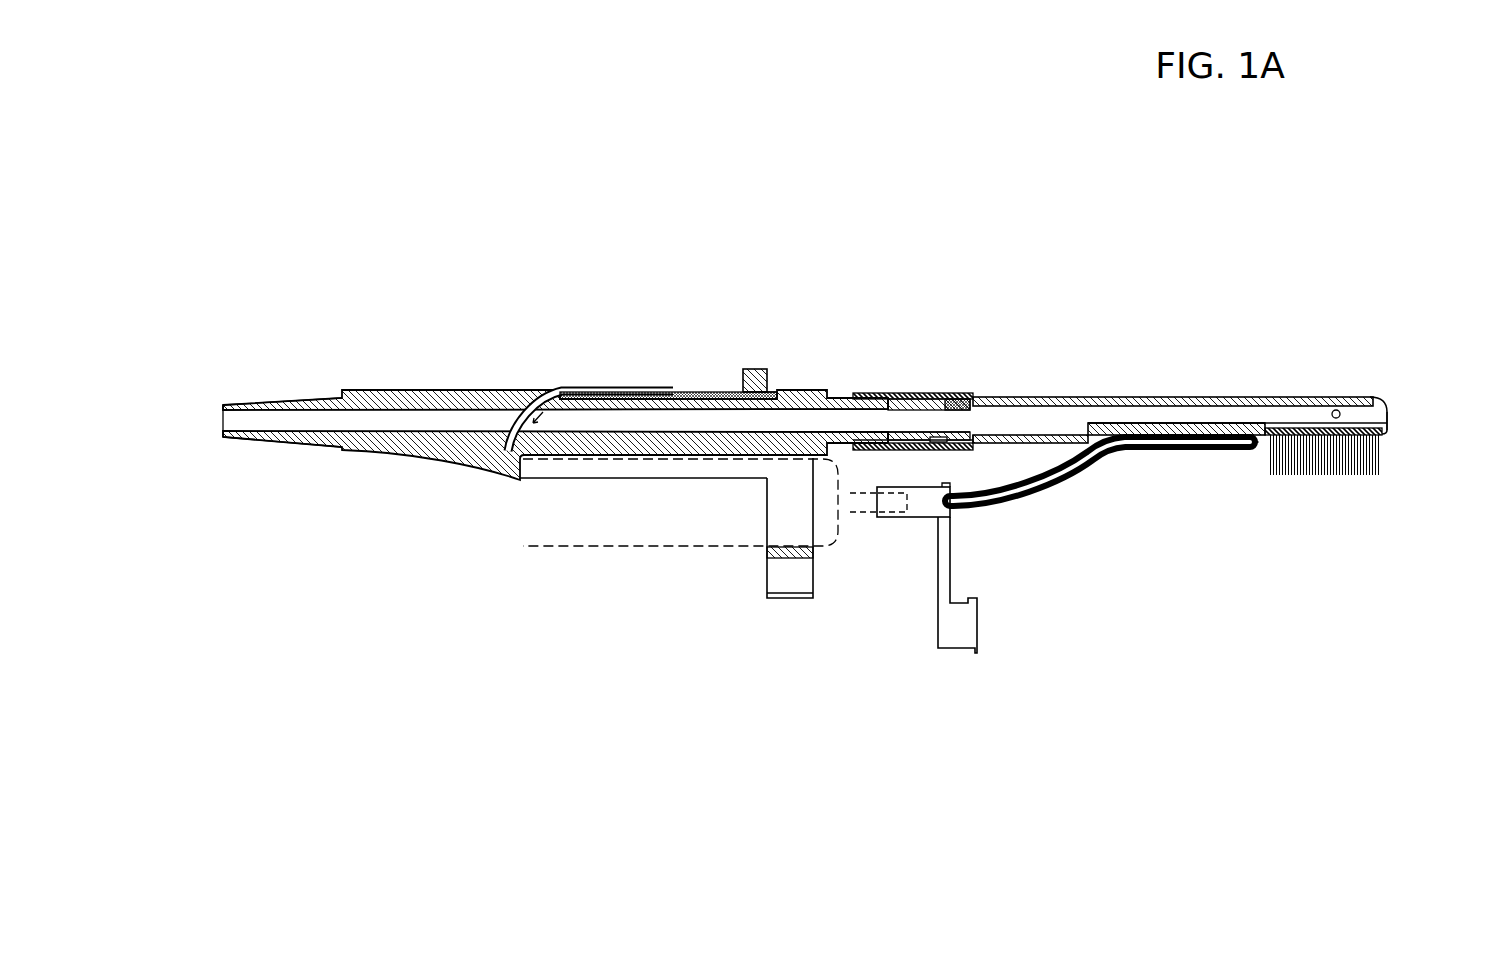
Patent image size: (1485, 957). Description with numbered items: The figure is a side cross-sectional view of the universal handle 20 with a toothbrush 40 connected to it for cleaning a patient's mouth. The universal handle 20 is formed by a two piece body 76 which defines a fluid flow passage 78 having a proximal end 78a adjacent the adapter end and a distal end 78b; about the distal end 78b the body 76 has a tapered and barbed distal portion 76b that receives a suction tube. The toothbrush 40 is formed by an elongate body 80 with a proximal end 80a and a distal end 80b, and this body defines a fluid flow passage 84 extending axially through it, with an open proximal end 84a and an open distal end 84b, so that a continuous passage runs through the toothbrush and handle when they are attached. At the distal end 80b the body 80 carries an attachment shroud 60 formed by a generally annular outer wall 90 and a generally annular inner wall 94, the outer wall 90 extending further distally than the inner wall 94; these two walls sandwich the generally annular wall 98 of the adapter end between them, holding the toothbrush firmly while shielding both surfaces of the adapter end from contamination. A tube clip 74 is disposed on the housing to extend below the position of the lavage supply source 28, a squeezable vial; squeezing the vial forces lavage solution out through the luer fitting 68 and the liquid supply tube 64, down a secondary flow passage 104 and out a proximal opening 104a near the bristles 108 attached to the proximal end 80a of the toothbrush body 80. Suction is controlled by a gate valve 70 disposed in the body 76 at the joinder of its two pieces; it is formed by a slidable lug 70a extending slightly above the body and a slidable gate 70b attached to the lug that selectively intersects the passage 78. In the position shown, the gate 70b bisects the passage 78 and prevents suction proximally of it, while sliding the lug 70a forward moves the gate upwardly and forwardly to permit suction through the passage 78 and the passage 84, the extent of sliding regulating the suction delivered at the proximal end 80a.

The universal handle 20 is at (470, 398).
The lavage supply source 28 is at (555, 525).
The toothbrush 40 is at (1158, 405).
The attachment shroud 60 is at (903, 390).
The liquid supply tube 64 is at (1077, 470).
The luer fitting 68 is at (932, 505).
The gate valve 70 is at (763, 372).
The slidable lug 70a is at (747, 368).
The slidable gate 70b is at (590, 395).
The tube clip 74 is at (787, 585).
The two piece body 76 is at (535, 397).
The distal portion 76b is at (298, 398).
The fluid flow passage 78 is at (395, 420).
The proximal end of fluid flow passage 78a is at (846, 413).
The distal end of fluid flow passage 78b is at (255, 404).
The elongate body 80 is at (1060, 395).
The proximal end of toothbrush body 80a is at (1375, 400).
The distal end of toothbrush body 80b is at (943, 442).
The fluid flow passage of toothbrush 84 is at (1128, 408).
The proximal end of toothbrush passage 84a is at (962, 422).
The distal end of toothbrush passage 84b is at (1395, 412).
The outer wall 90 is at (870, 393).
The inner wall 94 is at (932, 405).
The annular wall 98 is at (855, 440).
The secondary flow passage 104 is at (1180, 440).
The proximal opening 104a is at (1262, 442).
The bristles 108 is at (1347, 462).